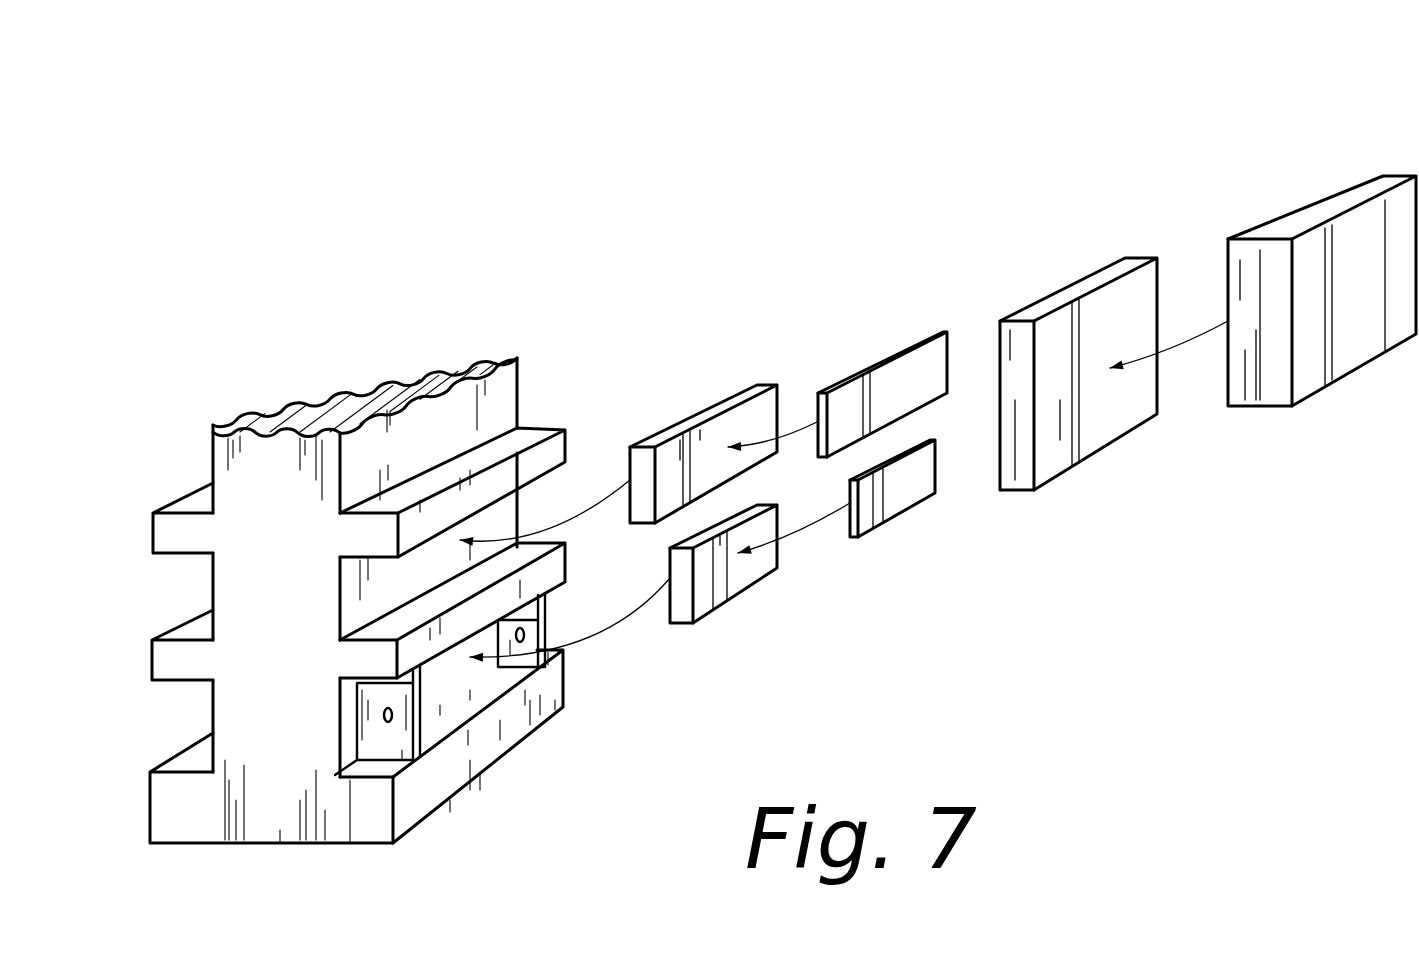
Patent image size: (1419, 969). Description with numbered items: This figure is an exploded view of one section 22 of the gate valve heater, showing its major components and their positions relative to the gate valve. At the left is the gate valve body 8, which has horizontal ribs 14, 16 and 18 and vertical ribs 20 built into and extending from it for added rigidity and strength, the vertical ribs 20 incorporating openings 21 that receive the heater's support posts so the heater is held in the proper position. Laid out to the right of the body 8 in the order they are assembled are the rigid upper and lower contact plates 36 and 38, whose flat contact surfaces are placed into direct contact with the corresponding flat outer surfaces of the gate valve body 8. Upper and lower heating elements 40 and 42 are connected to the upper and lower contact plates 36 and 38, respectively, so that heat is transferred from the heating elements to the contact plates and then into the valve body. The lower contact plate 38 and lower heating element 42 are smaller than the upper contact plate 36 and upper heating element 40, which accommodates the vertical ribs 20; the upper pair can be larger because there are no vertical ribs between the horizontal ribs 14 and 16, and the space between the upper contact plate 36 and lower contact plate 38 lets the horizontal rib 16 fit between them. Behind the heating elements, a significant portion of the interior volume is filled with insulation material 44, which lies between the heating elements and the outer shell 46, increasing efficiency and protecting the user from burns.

The body portion 8 is at (222, 573).
The horizontal rib 14 is at (543, 428).
The horizontal rib 16 is at (372, 662).
The horizontal rib 18 is at (403, 807).
The vertical rib 20 is at (422, 716).
The opening 21 is at (396, 713).
The section 22 is at (1140, 127).
The upper contact plate 36 is at (707, 410).
The lower contact plate 38 is at (737, 578).
The upper heating element 40 is at (887, 353).
The lower heating element 42 is at (908, 487).
The insulation material 44 is at (1081, 443).
The outer shell 46 is at (1311, 224).